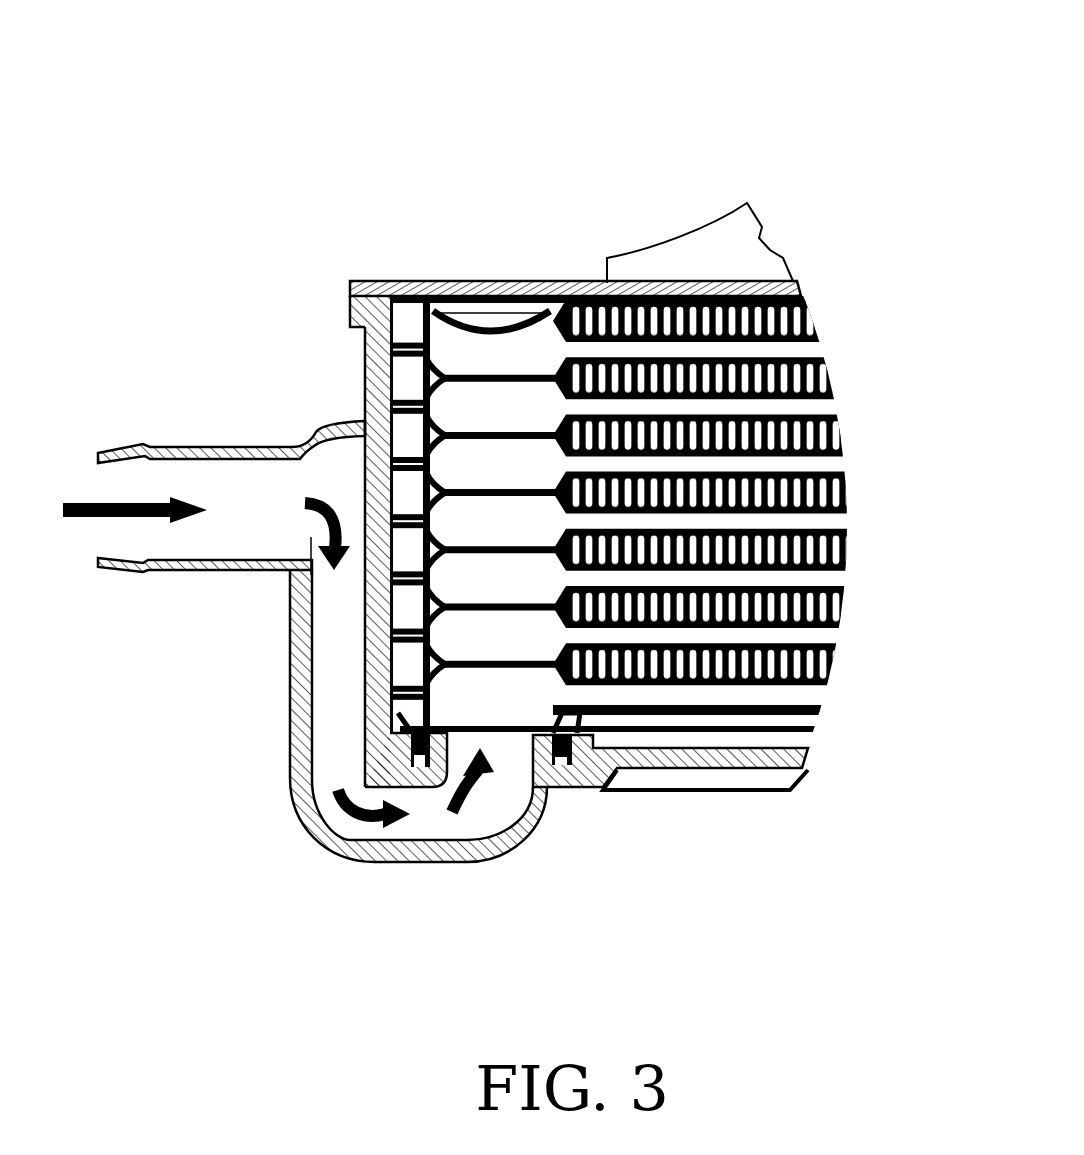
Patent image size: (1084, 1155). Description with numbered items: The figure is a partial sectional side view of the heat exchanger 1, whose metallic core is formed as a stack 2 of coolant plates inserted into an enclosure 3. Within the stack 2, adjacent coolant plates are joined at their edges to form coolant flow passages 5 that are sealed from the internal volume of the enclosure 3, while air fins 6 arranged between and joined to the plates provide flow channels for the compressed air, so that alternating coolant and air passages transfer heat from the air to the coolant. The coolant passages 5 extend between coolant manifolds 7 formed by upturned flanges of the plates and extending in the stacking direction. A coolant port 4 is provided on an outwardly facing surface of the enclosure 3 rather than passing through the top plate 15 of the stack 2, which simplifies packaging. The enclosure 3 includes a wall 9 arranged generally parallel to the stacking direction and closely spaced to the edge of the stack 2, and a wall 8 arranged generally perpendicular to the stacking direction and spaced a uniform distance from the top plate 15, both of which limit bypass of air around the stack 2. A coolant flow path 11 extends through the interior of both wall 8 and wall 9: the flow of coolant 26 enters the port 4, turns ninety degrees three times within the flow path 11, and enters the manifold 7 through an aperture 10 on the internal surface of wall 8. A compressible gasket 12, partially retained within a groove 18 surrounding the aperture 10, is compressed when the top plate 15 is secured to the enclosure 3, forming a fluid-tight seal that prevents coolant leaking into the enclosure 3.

The heat exchanger 1 is at (622, 163).
The stack 2 is at (857, 442).
The enclosure 3 is at (325, 305).
The coolant port 4 is at (97, 460).
The coolant flow passages 5 is at (827, 405).
The air fins 6 is at (752, 664).
The coolant manifold 7 is at (497, 353).
The wall 8 is at (668, 768).
The wall 9 is at (363, 387).
The aperture 10 is at (505, 788).
The coolant flow path 11 is at (332, 714).
The compressible gasket 12 is at (417, 743).
The top plate 15 is at (400, 280).
The groove 18 is at (420, 762).
The coolant 26 is at (85, 515).